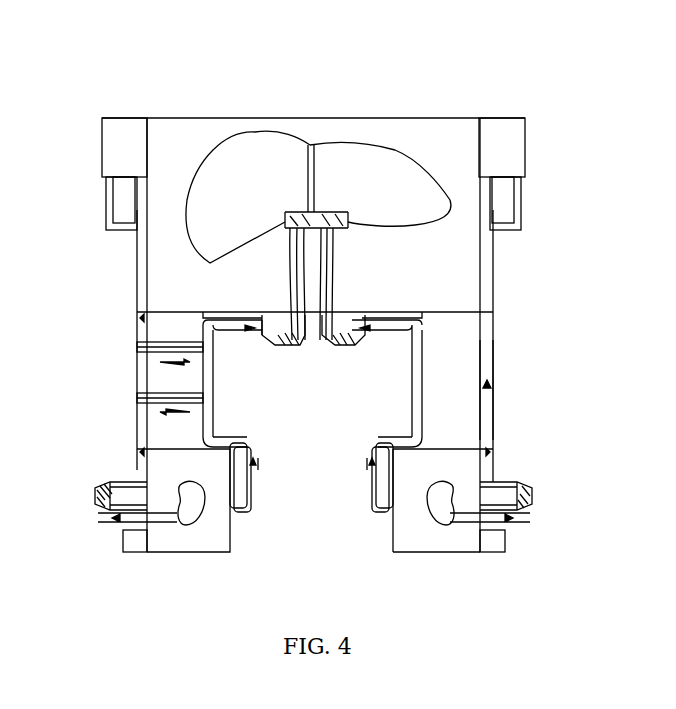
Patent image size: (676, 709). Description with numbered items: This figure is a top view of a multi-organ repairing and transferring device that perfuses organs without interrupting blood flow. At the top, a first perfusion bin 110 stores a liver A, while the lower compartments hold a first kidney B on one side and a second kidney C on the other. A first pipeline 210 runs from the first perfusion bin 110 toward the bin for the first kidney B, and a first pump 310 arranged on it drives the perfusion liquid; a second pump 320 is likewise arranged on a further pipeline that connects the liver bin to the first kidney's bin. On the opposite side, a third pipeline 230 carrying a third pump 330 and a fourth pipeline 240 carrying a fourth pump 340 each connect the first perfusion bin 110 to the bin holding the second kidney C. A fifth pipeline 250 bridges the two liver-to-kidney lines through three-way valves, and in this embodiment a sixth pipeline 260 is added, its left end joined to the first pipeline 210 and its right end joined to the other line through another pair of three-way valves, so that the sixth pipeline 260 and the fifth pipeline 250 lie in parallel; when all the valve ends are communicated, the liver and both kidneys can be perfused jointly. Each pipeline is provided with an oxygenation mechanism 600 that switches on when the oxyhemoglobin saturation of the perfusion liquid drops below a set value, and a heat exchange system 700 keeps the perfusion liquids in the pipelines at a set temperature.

The first perfusion bin 110 is at (360, 132).
The heat exchange system 700 is at (110, 152).
The first pipeline 210 is at (135, 368).
The third pipeline 230 is at (213, 385).
The fourth pipeline 240 is at (493, 385).
The fifth pipeline 250 is at (138, 318).
The sixth pipeline 260 is at (135, 388).
The first pump 310 is at (85, 481).
The second pump 320 is at (290, 342).
The third pump 330 is at (348, 345).
The fourth pump 340 is at (520, 512).
The oxygenation mechanism 600 is at (140, 455).
The liver A is at (253, 153).
The first kidney B is at (180, 522).
The second kidney C is at (452, 522).